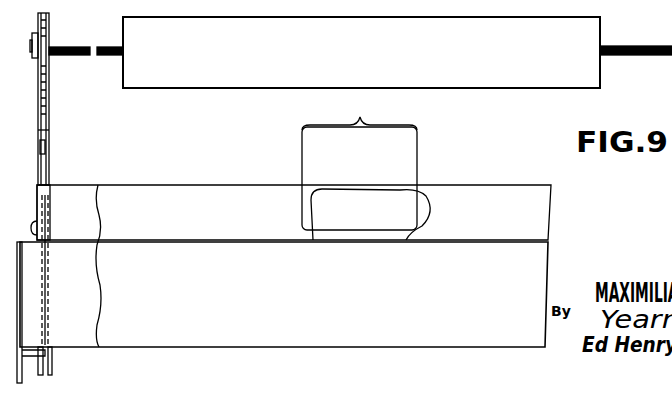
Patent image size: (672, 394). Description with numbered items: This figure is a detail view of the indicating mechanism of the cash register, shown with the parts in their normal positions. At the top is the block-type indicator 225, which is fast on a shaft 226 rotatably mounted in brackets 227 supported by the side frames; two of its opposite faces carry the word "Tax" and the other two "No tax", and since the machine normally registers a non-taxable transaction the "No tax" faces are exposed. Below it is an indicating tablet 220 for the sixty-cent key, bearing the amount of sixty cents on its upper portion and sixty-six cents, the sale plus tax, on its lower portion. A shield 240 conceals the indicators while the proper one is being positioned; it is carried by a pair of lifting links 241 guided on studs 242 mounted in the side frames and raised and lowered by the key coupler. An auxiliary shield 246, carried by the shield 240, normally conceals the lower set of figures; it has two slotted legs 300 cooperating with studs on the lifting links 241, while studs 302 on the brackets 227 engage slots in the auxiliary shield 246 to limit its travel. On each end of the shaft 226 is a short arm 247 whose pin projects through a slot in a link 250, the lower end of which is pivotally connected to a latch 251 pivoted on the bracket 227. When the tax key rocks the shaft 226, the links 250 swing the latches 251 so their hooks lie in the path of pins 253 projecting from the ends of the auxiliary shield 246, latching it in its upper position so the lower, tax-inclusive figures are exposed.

The short arm 247 is at (45, 22).
The link 250 is at (40, 78).
The bracket 227 is at (49, 138).
The latch 251 is at (42, 152).
The pin 253 is at (50, 197).
The stud 302 is at (38, 237).
The auxiliary shield 246 is at (145, 200).
The lifting link 241 is at (20, 283).
The stud 242 is at (38, 357).
The leg 300 is at (48, 377).
The indicating tablet 220 is at (403, 158).
The shaft 226 is at (645, 50).
The indicator 225 is at (578, 65).
The shield 240 is at (538, 257).